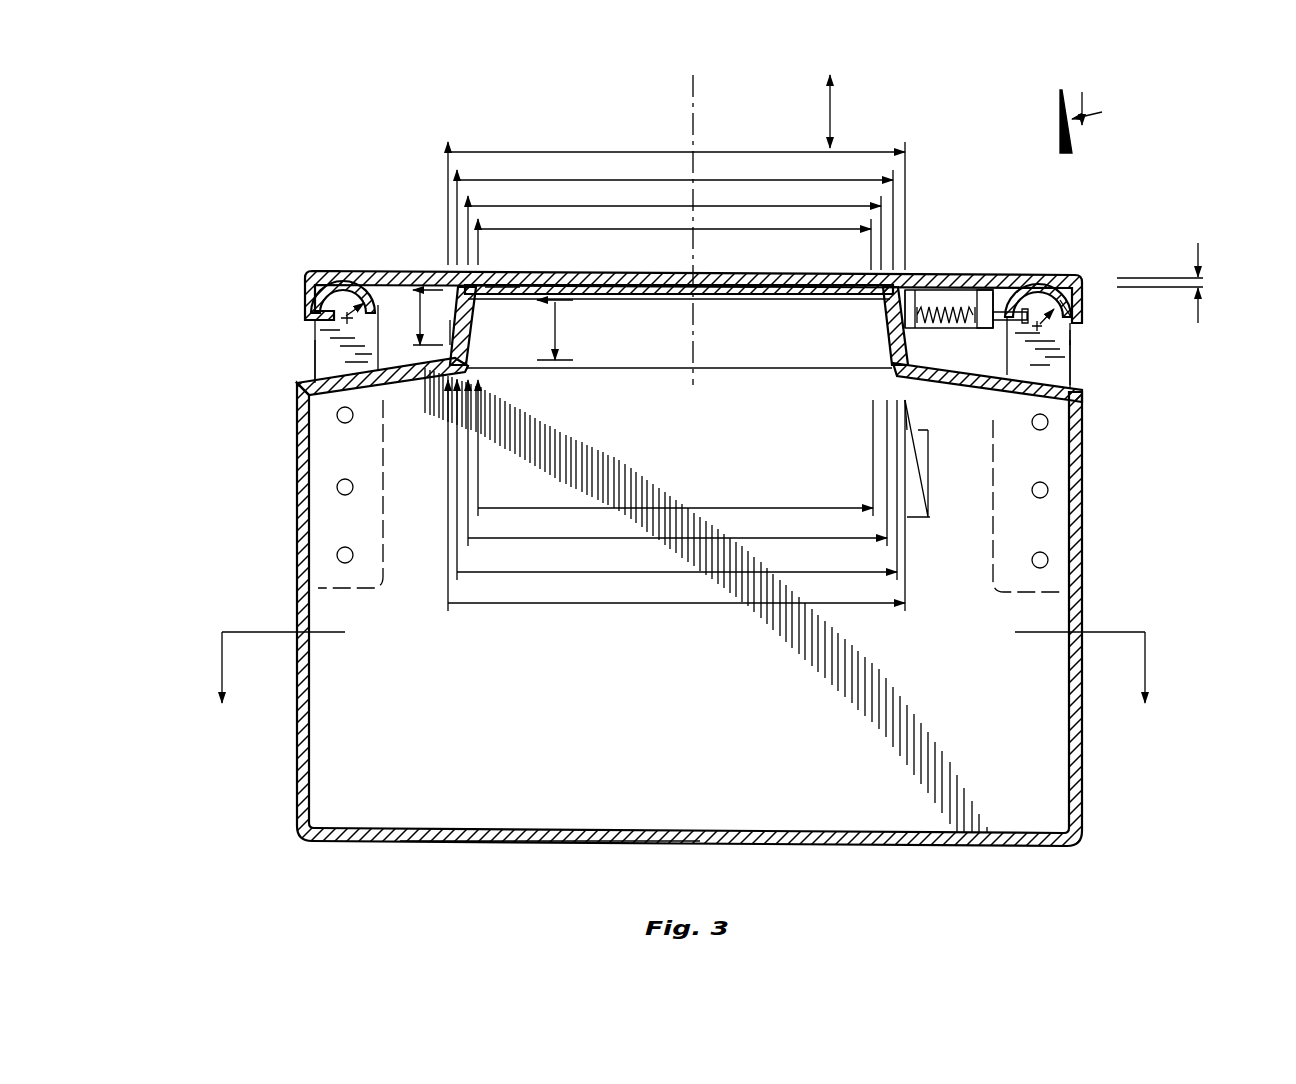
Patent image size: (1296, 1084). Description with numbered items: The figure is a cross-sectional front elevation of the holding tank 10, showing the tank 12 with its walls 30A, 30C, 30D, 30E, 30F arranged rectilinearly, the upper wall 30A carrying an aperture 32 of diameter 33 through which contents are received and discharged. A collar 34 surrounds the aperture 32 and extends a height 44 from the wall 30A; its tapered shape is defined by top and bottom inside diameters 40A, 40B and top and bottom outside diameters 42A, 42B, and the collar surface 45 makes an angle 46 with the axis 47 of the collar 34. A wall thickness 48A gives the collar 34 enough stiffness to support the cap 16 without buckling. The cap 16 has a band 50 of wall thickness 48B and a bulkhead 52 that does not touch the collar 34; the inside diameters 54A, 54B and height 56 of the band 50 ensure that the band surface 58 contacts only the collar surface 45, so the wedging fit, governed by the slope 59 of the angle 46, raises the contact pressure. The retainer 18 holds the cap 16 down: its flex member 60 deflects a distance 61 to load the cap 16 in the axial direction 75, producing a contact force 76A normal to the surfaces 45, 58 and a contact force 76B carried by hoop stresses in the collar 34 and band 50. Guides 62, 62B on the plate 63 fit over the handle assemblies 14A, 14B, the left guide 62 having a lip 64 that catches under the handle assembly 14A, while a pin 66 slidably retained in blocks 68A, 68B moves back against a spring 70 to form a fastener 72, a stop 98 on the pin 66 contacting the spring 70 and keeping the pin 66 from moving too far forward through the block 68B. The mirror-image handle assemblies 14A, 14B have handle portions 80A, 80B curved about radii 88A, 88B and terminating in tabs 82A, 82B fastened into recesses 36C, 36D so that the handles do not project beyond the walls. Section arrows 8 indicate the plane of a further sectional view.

The section line 8 is at (681, 677).
The holding tank 10 is at (247, 783).
The tank 12 is at (1100, 808).
The handle assembly 14A is at (308, 338).
The handle assembly 14B is at (1078, 333).
The cap 16 is at (920, 272).
The retainer 18 is at (1086, 282).
The wall 30A is at (335, 381).
The wall 30C is at (303, 458).
The wall 30D is at (320, 752).
The wall 30E is at (1085, 750).
The wall 30F is at (408, 840).
The aperture 32 is at (766, 360).
The diameter 33 is at (610, 508).
The collar 34 is at (878, 338).
The recess 36C is at (340, 588).
The recess 36D is at (1047, 578).
The top inside diameter 40A is at (690, 220).
The bottom inside diameter 40B is at (640, 538).
The top outside diameter 42A is at (690, 165).
The bottom outside diameter 42B is at (690, 603).
The height 44 is at (565, 338).
The collar surface 45 is at (450, 320).
The angle 46 is at (913, 520).
The axis 47 is at (695, 92).
The wall thickness 48A is at (900, 357).
The wall thickness 48B is at (908, 337).
The band 50 is at (400, 272).
The bulkhead 52 is at (460, 285).
The inside diameter 54A is at (655, 192).
The inside diameter 54B is at (660, 572).
The height 56 is at (418, 300).
The band surface 58 is at (505, 285).
The slope 59 is at (928, 455).
The flex member 60 is at (1001, 311).
The distance 61 is at (1200, 253).
The guide 62 is at (306, 288).
The guide 62B is at (1080, 305).
The plate 63 is at (1040, 288).
The lip 64 is at (330, 316).
The pin 66 is at (1066, 292).
The block 68A is at (912, 291).
The block 68B is at (1012, 300).
The spring 70 is at (976, 284).
The fastener 72 is at (990, 343).
The axial direction 75 is at (832, 108).
The contact force 76A is at (1100, 113).
The contact force 76B is at (1084, 100).
The handle portion 80A is at (336, 281).
The handle portion 80B is at (1072, 298).
The tab 82A is at (316, 350).
The tab 82B is at (1068, 350).
The radius 88A is at (312, 276).
The radius 88B is at (1066, 328).
The stop 98 is at (981, 300).